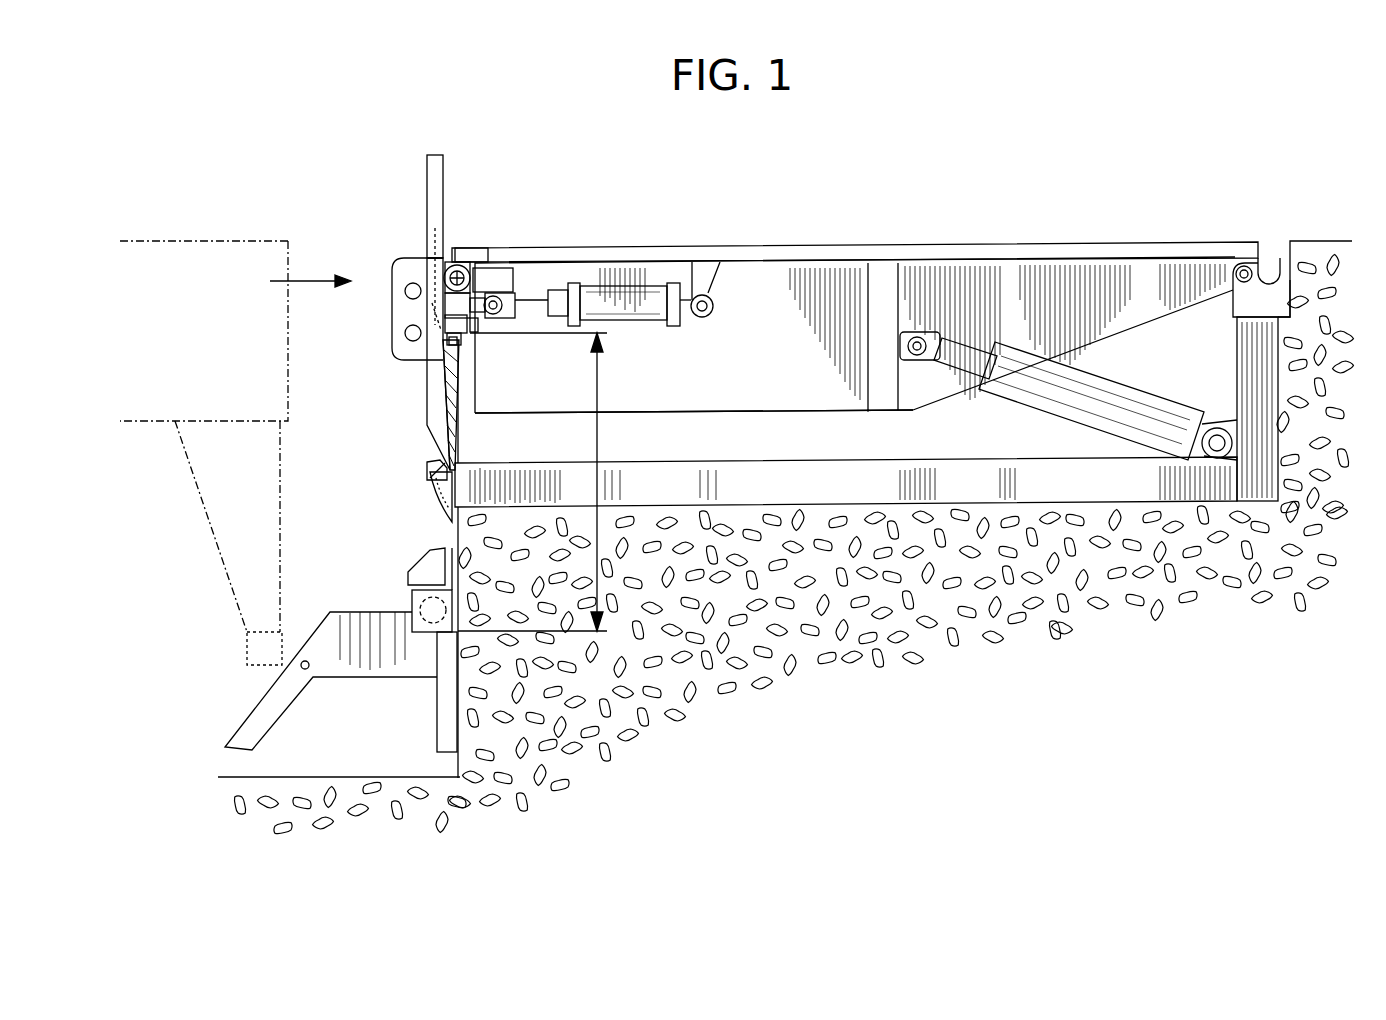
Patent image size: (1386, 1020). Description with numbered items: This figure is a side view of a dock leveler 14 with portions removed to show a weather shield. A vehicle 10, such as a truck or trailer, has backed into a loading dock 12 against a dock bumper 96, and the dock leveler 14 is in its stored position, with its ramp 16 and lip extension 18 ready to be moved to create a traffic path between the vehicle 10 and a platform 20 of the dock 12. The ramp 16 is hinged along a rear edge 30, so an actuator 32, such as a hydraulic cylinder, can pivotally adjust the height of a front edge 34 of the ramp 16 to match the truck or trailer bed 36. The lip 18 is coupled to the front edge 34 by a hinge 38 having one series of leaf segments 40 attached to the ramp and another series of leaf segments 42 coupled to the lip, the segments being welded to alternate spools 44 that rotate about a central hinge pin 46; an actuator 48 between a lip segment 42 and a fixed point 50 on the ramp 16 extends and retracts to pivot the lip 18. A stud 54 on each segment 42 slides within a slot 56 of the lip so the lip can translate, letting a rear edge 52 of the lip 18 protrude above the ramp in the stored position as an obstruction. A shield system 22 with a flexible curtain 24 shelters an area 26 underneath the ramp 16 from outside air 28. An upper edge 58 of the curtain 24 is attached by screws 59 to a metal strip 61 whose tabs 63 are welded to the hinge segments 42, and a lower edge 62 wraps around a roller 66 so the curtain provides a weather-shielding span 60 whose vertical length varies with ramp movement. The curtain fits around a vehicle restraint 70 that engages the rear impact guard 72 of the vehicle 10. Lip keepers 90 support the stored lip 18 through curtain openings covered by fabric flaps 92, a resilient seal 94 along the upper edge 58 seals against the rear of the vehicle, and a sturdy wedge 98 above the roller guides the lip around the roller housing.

The vehicle 10 is at (289, 305).
The loading dock 12 is at (420, 777).
The dock leveler 14 is at (1037, 160).
The ramp 16 is at (780, 248).
The lip extension 18 is at (427, 432).
The platform 20 is at (1325, 241).
The shield system 22 is at (458, 440).
The curtain 24 is at (458, 462).
The area underneath ramp 26 is at (694, 428).
The outside air 28 is at (308, 526).
The rear edge 30 is at (1240, 260).
The actuator 32 is at (1055, 413).
The front edge 34 is at (500, 248).
The truck or trailer bed 36 is at (255, 241).
The hinge 38 is at (458, 265).
The leaf segments 40 is at (505, 278).
The leaf segments 42 is at (452, 305).
The spools 44 is at (467, 268).
The central hinge pin 46 is at (440, 292).
The actuator 48 is at (657, 325).
The fixed point 50 is at (712, 320).
The rear edge of lip 52 is at (432, 155).
The stud 54 is at (432, 310).
The slot 56 is at (433, 243).
The upper edge of curtain 58 is at (472, 335).
The screws 59 is at (449, 342).
The weather-shielding span 60 is at (598, 398).
The metal strip 61 is at (462, 328).
The lower edge of curtain 62 is at (440, 650).
The tabs 63 is at (445, 326).
The roller 66 is at (425, 603).
The vehicle restraint 70 is at (352, 680).
The rear impact guard 72 is at (258, 665).
The lip keepers 90 is at (427, 468).
The fabric flaps 92 is at (440, 495).
The resilient seal 94 is at (445, 395).
The dock bumper 96 is at (392, 343).
The wedge 98 is at (425, 553).